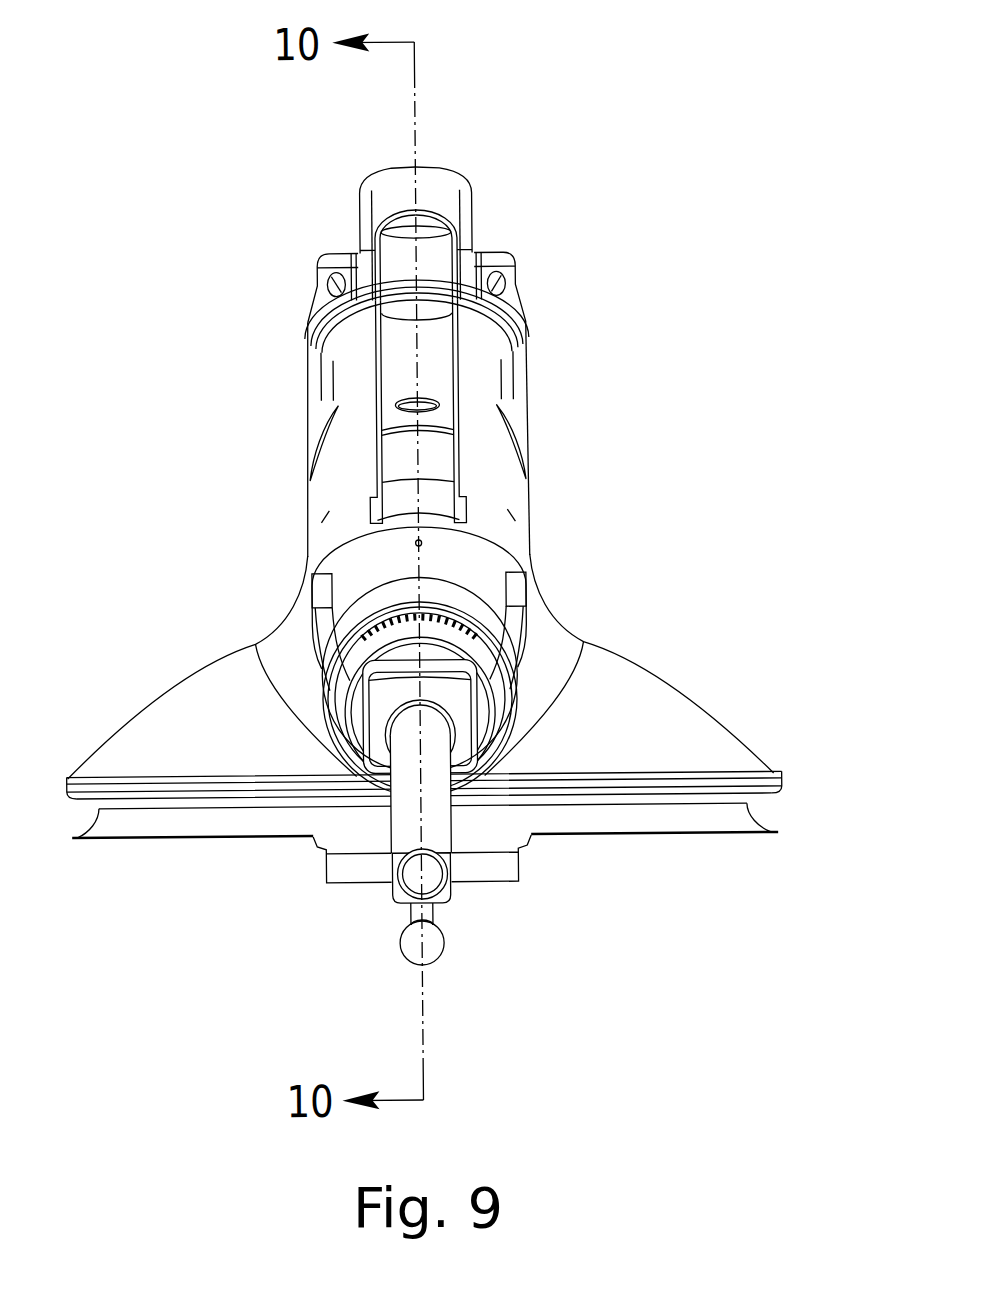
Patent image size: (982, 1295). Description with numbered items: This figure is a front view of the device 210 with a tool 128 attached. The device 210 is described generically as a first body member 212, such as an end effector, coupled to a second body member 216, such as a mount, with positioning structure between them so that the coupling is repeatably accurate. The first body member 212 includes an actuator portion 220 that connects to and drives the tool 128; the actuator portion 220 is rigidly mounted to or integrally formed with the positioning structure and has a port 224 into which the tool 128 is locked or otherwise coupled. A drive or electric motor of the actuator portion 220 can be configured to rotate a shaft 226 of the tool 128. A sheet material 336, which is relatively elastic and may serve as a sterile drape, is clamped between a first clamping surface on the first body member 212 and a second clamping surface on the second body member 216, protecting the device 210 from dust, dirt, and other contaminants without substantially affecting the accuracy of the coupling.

The device 210 is at (594, 282).
The first body member 212 is at (673, 722).
The second body member 216 is at (525, 848).
The actuator portion 220 is at (504, 490).
The port 224 is at (448, 727).
The shaft 226 is at (309, 871).
The sheet material 336 is at (715, 820).
The tool 128 is at (401, 948).